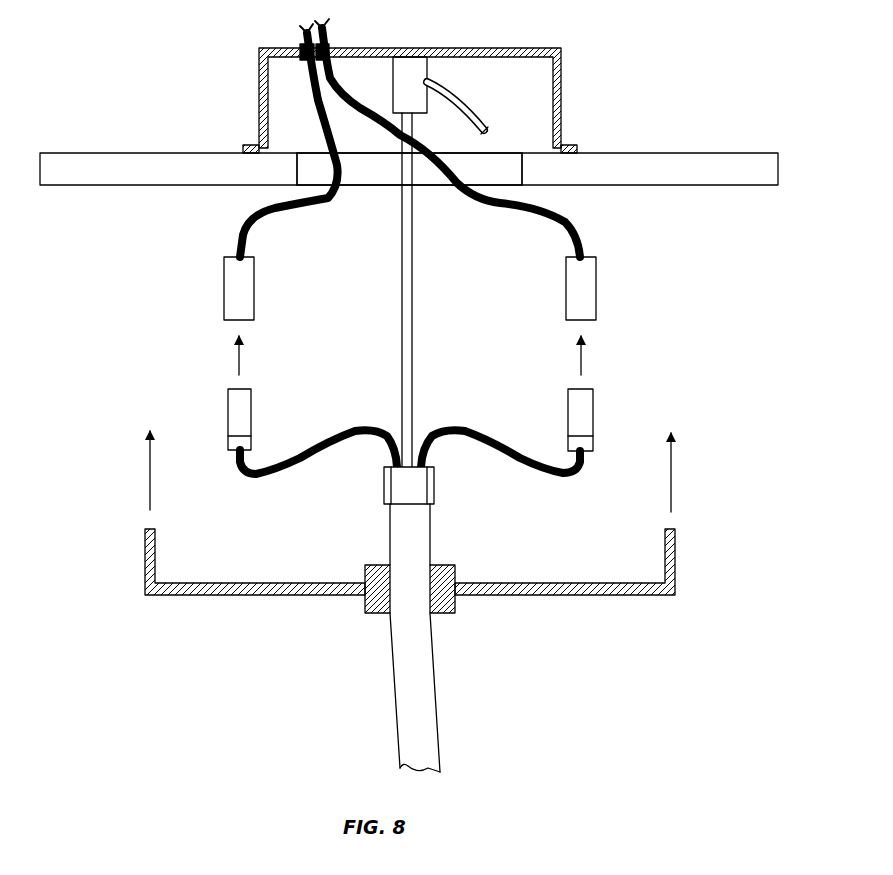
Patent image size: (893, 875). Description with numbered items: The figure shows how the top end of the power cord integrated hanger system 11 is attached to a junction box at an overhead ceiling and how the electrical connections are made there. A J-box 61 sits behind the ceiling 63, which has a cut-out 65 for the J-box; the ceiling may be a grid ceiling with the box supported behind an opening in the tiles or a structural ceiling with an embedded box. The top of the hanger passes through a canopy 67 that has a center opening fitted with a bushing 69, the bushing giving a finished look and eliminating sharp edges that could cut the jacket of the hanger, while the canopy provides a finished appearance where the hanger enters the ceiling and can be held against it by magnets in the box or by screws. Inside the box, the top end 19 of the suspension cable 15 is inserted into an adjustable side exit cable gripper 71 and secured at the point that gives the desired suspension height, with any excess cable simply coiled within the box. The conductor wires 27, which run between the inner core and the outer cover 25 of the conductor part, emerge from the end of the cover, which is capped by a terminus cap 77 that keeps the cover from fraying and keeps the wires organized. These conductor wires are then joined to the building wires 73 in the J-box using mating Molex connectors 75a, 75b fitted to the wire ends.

The power cord integrated hanger system 11 is at (462, 711).
The suspension cable 15 is at (402, 318).
The top end 19 is at (453, 110).
The outer cover 25 is at (398, 530).
The conductor wires 27 is at (335, 430).
The J-box 61 is at (561, 90).
The ceiling 63 is at (130, 178).
The cut-out 65 is at (511, 175).
The canopy 67 is at (520, 597).
The bushing 69 is at (367, 607).
The adjustable side exit cable gripper 71 is at (401, 70).
The building wires 73 is at (240, 232).
The Molex connector 75a is at (228, 413).
The Molex connector 75b is at (224, 302).
The terminus cap 77 is at (384, 492).